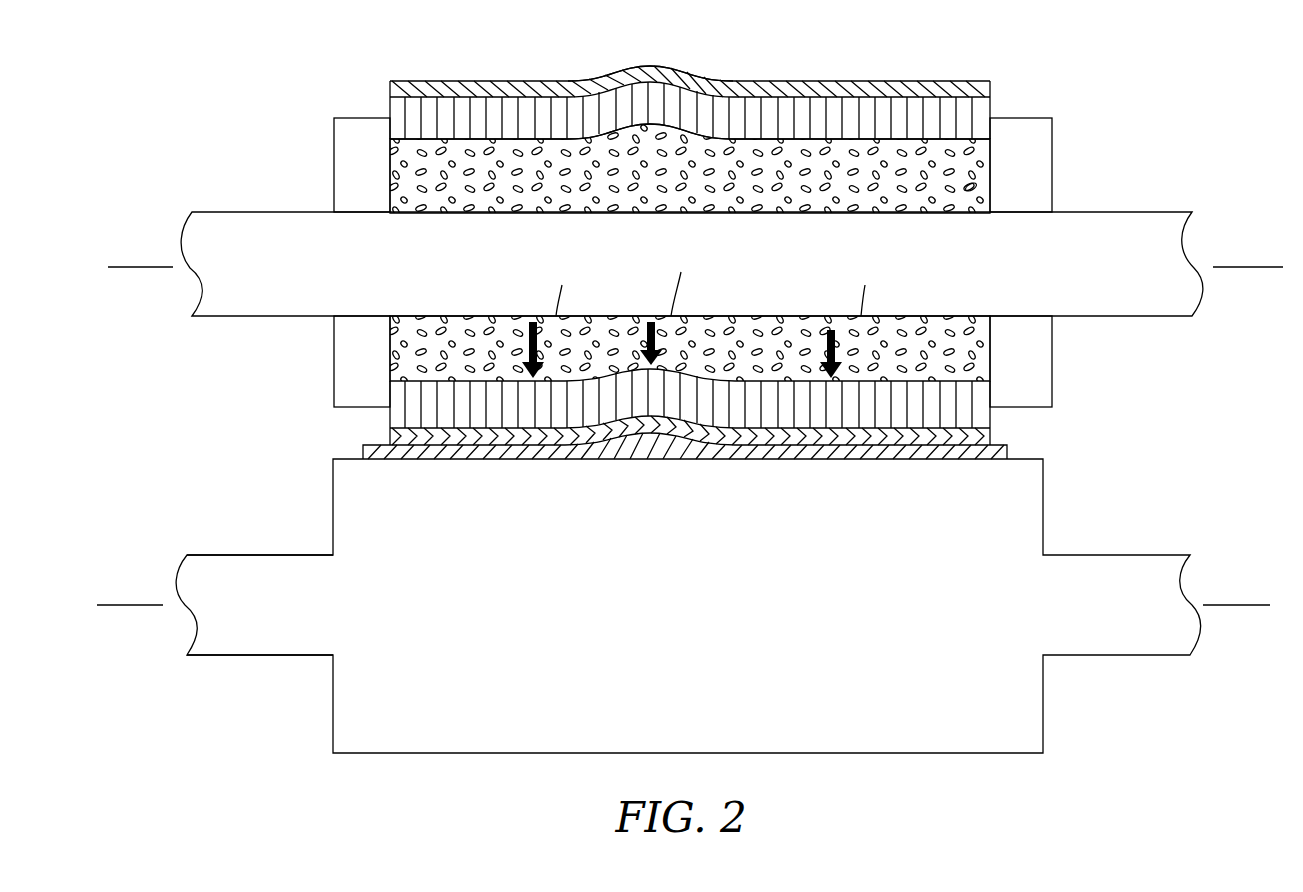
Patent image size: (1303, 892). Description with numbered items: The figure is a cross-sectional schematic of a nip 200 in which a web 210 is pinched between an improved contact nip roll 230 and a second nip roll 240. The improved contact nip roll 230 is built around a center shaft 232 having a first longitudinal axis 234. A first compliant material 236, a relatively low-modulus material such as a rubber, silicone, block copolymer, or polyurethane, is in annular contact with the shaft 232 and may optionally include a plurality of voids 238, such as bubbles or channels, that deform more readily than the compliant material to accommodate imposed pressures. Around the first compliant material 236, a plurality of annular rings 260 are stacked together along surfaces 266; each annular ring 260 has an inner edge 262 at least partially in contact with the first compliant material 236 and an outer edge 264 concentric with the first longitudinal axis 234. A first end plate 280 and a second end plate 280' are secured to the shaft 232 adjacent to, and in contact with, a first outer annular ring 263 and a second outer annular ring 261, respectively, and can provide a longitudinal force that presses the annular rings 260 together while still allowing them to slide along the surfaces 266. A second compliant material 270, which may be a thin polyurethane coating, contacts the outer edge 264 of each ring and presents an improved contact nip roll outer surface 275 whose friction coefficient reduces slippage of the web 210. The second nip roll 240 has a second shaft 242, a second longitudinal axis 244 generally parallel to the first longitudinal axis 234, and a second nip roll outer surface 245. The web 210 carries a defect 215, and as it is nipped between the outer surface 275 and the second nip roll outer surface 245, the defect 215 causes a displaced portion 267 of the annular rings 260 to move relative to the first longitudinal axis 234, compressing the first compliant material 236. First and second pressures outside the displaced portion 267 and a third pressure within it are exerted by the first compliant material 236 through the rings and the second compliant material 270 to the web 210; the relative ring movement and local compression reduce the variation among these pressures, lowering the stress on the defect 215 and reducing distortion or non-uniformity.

The nip 200 is at (150, 103).
The first end plate 280 is at (667, 142).
The second end plate 280' is at (733, 361).
The annular rings 260 is at (511, 105).
The first outer annular ring 263 is at (391, 82).
The outer edge 264 is at (460, 97).
The displaced portion 267 is at (740, 58).
The improved contact nip roll outer surface 275 is at (810, 81).
The surfaces 266 is at (888, 120).
The second compliant material 270 is at (920, 88).
The second outer annular ring 261 is at (982, 108).
The inner edge 262 is at (985, 150).
The first compliant material 236 is at (985, 162).
The voids 238 is at (975, 185).
The center shaft 232 is at (250, 212).
The first longitudinal axis 234 is at (135, 267).
The improved contact nip roll 230 is at (190, 392).
The web 210 is at (490, 460).
The defect 215 is at (651, 460).
The second nip roll outer surface 245 is at (1025, 459).
The second nip roll 240 is at (170, 500).
The second shaft 242 is at (235, 655).
The second longitudinal axis 244 is at (135, 605).